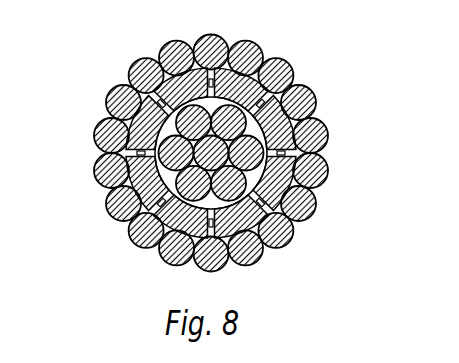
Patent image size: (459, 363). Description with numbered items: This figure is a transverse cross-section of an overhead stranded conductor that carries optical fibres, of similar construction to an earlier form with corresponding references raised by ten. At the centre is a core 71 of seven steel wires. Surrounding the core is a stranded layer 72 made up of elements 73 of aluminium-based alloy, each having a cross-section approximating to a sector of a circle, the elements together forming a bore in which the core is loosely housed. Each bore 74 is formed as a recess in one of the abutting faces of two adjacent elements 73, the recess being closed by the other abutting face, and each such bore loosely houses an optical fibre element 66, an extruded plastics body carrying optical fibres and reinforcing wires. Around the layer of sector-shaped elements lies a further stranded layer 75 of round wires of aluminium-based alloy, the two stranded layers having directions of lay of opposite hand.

The optical fibre element 66 is at (153, 212).
The core 71 is at (300, 114).
The stranded layer 72 is at (296, 233).
The element 73 is at (294, 178).
The bore 74 is at (109, 95).
The stranded layer 75 is at (289, 69).